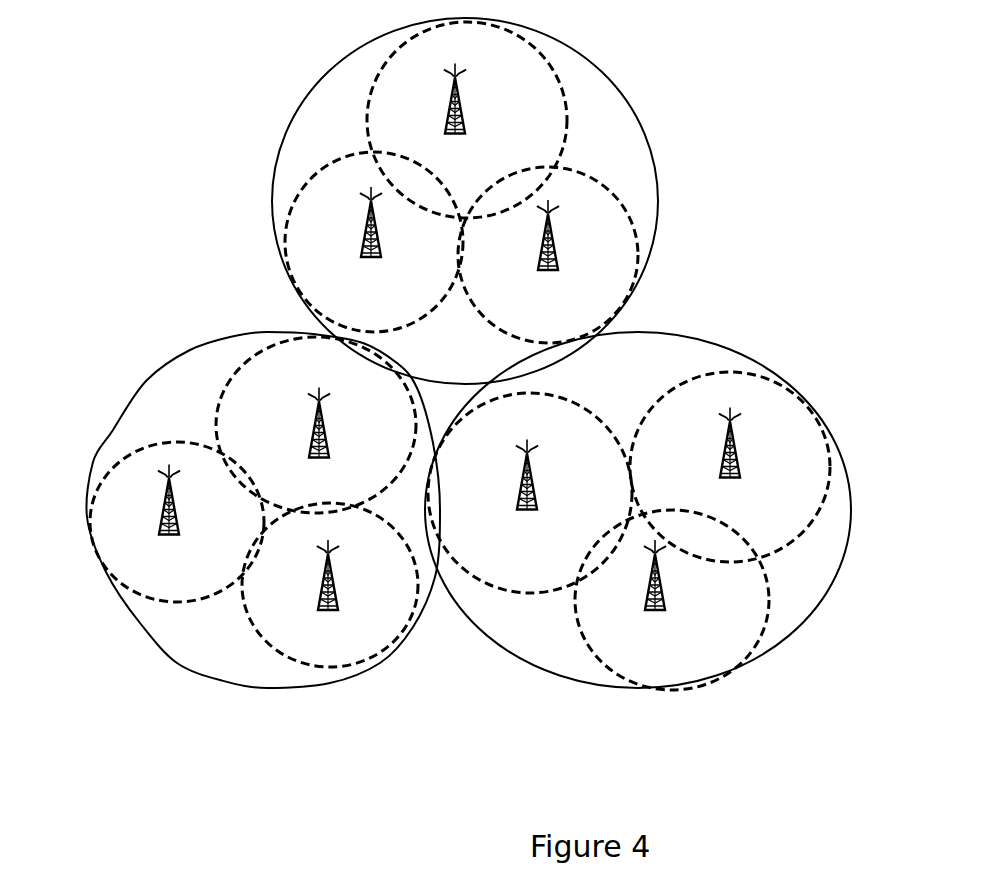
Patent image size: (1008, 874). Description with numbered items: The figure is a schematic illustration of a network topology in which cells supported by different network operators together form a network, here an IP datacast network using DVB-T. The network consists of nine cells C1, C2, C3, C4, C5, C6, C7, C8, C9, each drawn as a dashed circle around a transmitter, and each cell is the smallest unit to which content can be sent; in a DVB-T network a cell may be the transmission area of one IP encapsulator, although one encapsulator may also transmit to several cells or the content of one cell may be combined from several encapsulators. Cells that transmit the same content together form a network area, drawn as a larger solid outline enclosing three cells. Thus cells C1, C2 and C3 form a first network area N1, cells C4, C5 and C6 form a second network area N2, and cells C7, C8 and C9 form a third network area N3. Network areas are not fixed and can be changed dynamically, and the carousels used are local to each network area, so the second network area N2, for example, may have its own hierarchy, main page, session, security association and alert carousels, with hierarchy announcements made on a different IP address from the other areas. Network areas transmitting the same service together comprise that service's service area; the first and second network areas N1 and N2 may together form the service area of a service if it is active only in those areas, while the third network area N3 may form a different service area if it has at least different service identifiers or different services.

The first network area N1 is at (657, 207).
The second network area N2 is at (737, 353).
The third network area N3 is at (175, 665).
The cell C1 is at (527, 43).
The cell C2 is at (307, 178).
The cell C3 is at (615, 200).
The cell C4 is at (812, 530).
The cell C5 is at (643, 688).
The cell C6 is at (480, 580).
The cell C7 is at (345, 668).
The cell C8 is at (226, 370).
The cell C9 is at (140, 450).